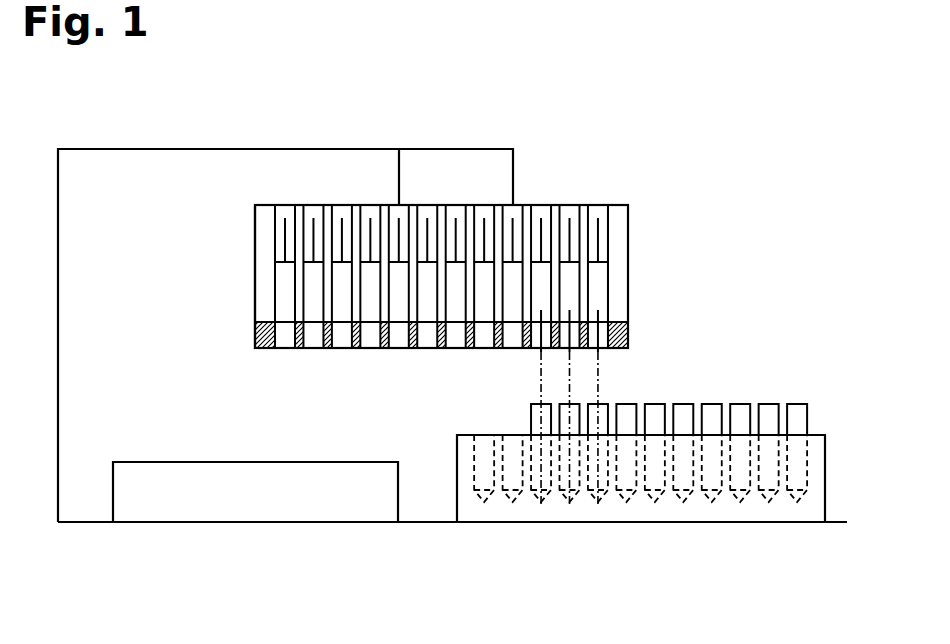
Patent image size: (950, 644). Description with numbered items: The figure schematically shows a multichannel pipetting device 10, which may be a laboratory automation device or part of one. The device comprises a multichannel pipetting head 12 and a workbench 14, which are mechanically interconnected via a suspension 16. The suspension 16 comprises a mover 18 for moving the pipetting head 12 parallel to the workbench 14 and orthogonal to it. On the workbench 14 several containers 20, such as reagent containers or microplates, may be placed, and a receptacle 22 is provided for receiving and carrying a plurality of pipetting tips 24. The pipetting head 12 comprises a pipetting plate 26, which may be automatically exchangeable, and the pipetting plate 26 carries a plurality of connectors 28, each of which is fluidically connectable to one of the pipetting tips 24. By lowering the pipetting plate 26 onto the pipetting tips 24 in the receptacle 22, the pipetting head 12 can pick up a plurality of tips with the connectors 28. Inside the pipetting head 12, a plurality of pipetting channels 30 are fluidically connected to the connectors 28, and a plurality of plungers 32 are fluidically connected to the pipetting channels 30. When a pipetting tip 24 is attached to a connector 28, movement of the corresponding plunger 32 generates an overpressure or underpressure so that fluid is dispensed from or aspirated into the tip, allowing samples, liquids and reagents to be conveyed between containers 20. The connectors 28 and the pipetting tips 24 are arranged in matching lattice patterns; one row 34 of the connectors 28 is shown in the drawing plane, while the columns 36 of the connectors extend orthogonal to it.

The multichannel pipetting device 10 is at (660, 88).
The multichannel pipetting head 12 is at (628, 263).
The workbench 14 is at (424, 522).
The suspension 16 is at (215, 148).
The mover 18 is at (455, 148).
The container 20 is at (232, 500).
The receptacle 22 is at (615, 504).
The pipetting tip 24 is at (769, 410).
The pipetting plate 26 is at (665, 333).
The connector 28 is at (313, 349).
The pipetting channel 30 is at (342, 294).
The plunger 32 is at (342, 244).
The row 34 is at (222, 331).
The column 36 is at (278, 375).